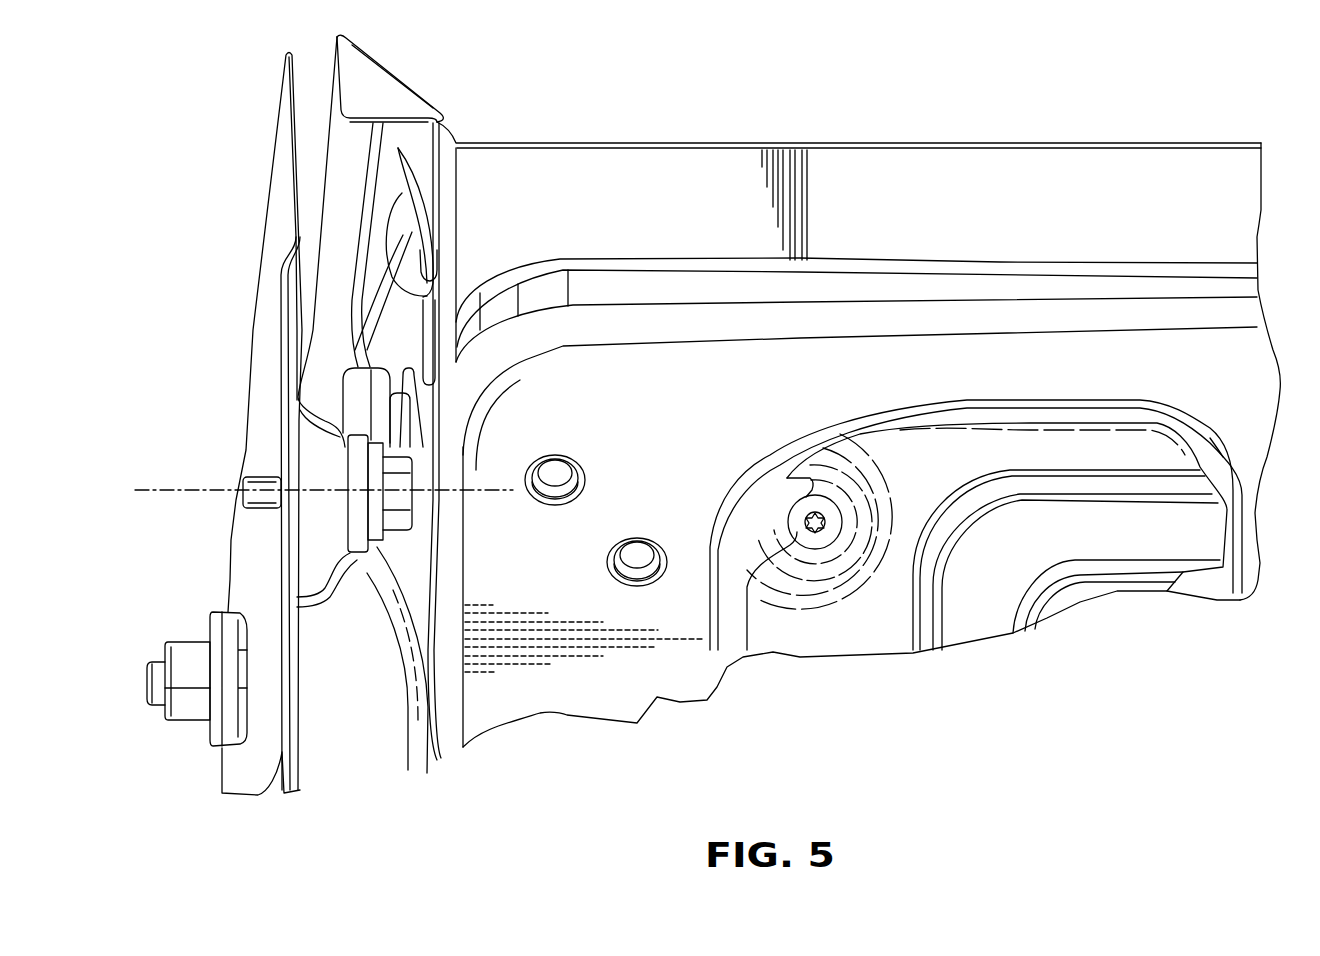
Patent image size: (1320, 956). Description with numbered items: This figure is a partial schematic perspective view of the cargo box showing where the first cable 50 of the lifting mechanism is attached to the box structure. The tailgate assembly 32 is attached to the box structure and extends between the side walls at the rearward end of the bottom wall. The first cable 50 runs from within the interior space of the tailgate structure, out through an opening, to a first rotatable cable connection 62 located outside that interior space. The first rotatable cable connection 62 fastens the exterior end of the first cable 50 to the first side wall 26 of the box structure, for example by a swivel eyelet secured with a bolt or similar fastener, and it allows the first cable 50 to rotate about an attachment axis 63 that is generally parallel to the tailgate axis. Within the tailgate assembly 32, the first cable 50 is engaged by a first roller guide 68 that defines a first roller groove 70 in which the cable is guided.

The first side wall 26 is at (280, 235).
The tailgate assembly 32 is at (727, 143).
The first cable 50 is at (380, 273).
The first rotatable cable connection 62 is at (367, 421).
The attachment axis 63 is at (147, 487).
The first roller guide 68 is at (417, 198).
The first roller groove 70 is at (420, 278).